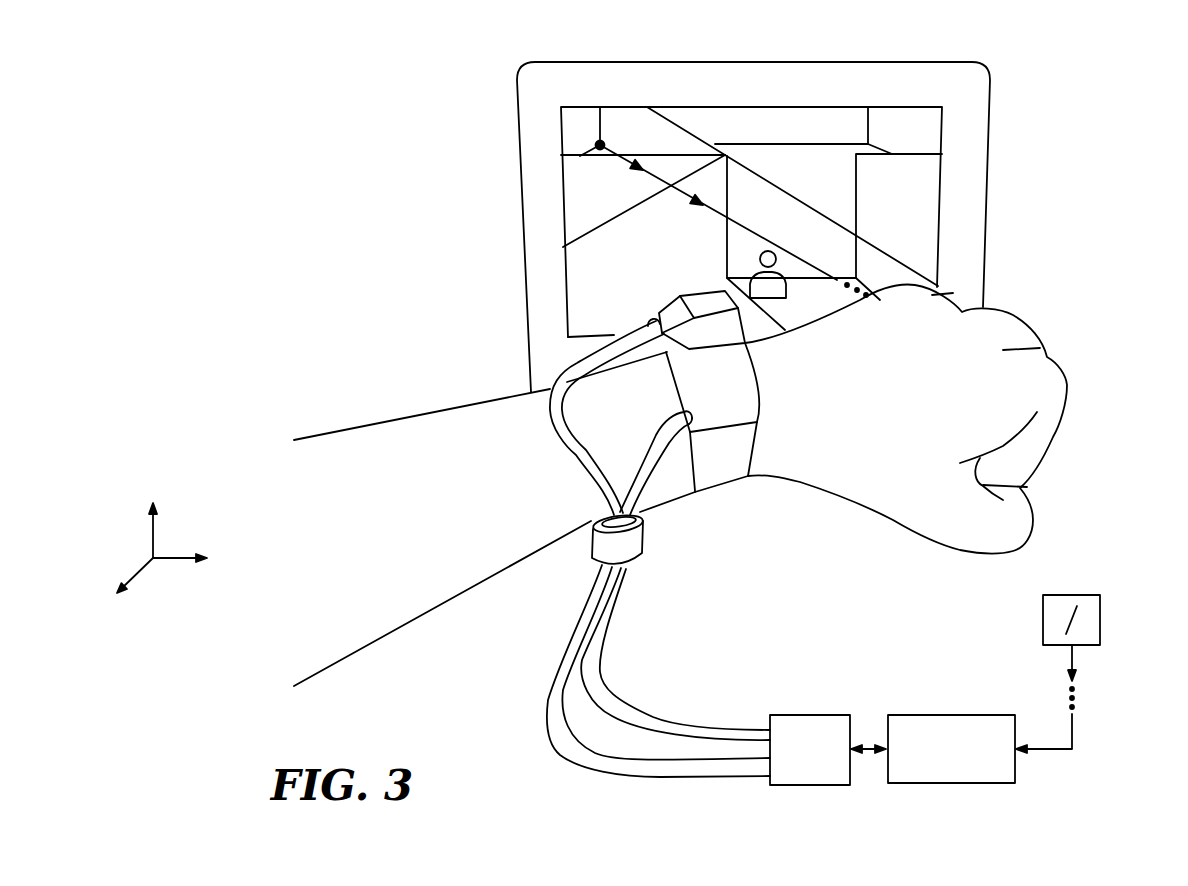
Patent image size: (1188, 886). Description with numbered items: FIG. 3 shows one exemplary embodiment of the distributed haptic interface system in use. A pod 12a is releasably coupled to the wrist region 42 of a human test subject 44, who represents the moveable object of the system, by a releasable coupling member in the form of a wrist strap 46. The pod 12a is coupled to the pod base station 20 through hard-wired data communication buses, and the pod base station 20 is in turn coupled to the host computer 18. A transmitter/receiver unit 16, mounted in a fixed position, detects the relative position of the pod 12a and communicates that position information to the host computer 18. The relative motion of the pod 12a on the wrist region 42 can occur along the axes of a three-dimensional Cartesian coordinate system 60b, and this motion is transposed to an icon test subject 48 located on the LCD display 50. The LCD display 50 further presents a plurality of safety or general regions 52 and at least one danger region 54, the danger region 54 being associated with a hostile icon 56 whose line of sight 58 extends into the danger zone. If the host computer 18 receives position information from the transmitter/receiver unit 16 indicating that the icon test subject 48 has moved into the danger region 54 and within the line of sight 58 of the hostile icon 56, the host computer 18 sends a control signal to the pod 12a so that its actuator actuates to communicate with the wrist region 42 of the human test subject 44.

The pod 12a is at (699, 303).
The transmitter/receiver unit 16 is at (1100, 620).
The host computer 18 is at (978, 714).
The pod base station 20 is at (826, 714).
The wrist region 42 is at (715, 412).
The human test subject 44 is at (375, 440).
The wrist strap 46 is at (740, 472).
The icon test subject 48 is at (769, 251).
The LCD display 50 is at (846, 85).
The safety or general region 52 is at (586, 252).
The danger region 54 is at (743, 205).
The hostile icon 56 is at (597, 144).
The line of sight 58 is at (687, 195).
The three-dimensional Cartesian coordinate system 60b is at (173, 580).